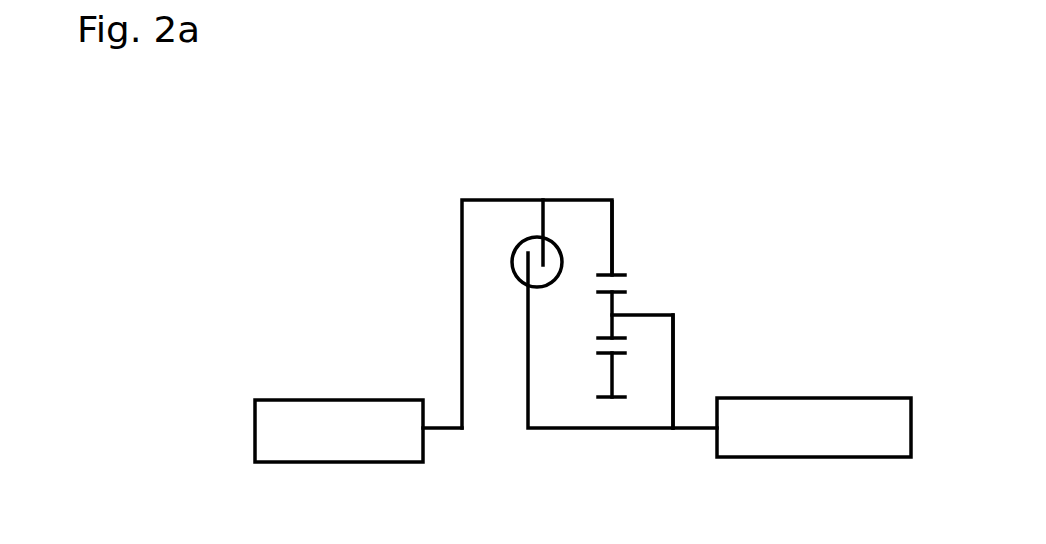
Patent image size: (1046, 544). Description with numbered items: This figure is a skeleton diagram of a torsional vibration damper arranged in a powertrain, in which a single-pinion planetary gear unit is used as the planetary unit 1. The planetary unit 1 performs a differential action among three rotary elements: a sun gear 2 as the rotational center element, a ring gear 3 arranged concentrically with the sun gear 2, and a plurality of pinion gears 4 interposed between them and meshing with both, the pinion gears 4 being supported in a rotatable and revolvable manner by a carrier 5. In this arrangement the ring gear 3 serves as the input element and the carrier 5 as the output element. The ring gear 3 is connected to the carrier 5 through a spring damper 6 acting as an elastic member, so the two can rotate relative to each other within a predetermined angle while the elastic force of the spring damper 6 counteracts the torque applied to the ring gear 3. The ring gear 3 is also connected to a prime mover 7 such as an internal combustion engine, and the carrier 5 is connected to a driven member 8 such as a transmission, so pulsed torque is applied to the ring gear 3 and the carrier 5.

The planetary unit 1 is at (625, 235).
The sun gear 2 is at (613, 402).
The ring gear 3 is at (617, 270).
The pinion gears 4 is at (627, 300).
The carrier 5 is at (676, 340).
The spring damper 6 is at (523, 232).
The prime mover 7 is at (350, 400).
The driven member 8 is at (851, 398).